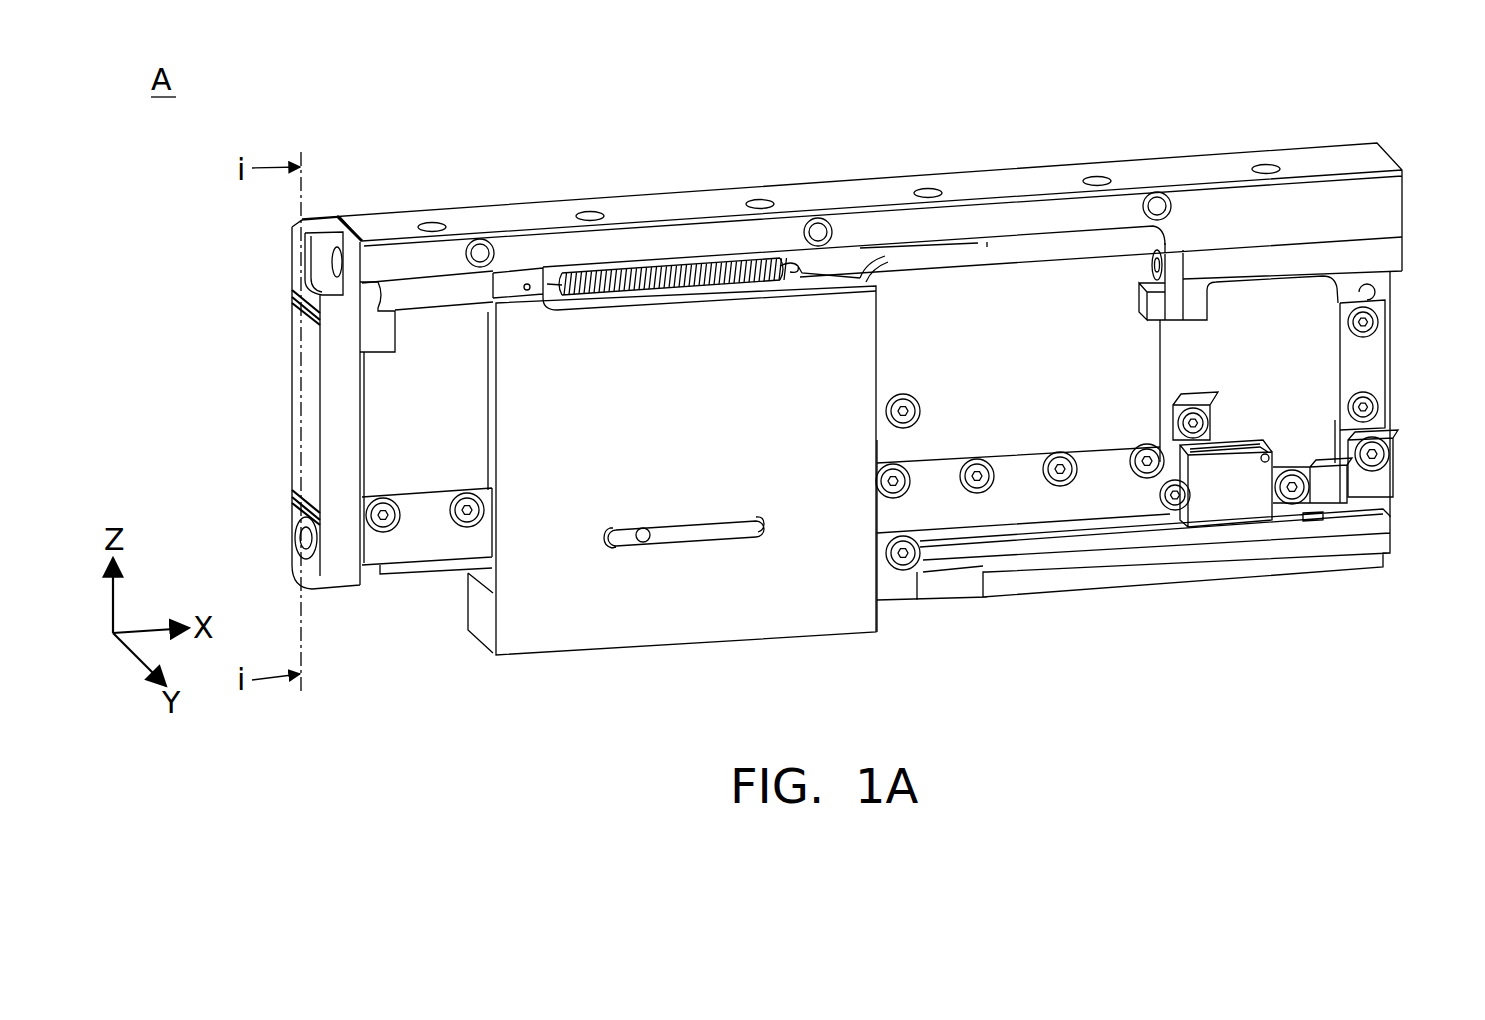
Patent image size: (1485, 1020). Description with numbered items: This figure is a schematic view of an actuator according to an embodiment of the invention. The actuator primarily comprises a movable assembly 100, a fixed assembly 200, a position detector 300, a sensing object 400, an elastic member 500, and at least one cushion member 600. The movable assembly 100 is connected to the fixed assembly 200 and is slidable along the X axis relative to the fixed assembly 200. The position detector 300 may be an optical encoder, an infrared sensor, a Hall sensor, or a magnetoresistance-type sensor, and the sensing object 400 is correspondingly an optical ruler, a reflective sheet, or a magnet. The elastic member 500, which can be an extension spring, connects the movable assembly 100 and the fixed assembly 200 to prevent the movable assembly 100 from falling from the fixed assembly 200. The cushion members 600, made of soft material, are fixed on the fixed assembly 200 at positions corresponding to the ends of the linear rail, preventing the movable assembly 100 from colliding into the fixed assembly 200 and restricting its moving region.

The movable assembly 100 is at (488, 648).
The fixed assembly 200 is at (1404, 144).
The position detector 300 is at (1232, 502).
The sensing object 400 is at (1120, 540).
The elastic member 500 is at (680, 260).
The cushion member 600 is at (370, 296).